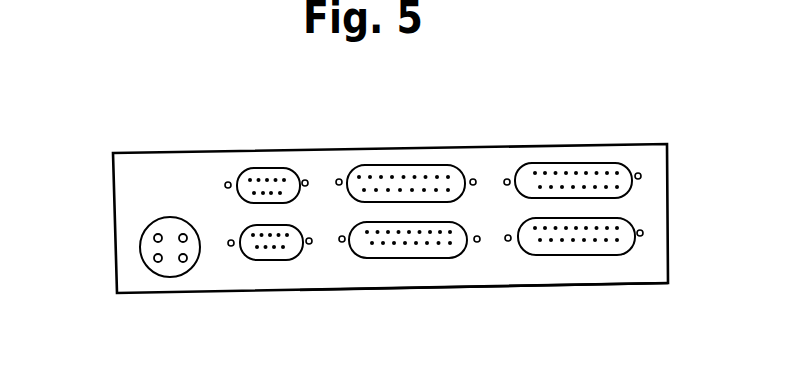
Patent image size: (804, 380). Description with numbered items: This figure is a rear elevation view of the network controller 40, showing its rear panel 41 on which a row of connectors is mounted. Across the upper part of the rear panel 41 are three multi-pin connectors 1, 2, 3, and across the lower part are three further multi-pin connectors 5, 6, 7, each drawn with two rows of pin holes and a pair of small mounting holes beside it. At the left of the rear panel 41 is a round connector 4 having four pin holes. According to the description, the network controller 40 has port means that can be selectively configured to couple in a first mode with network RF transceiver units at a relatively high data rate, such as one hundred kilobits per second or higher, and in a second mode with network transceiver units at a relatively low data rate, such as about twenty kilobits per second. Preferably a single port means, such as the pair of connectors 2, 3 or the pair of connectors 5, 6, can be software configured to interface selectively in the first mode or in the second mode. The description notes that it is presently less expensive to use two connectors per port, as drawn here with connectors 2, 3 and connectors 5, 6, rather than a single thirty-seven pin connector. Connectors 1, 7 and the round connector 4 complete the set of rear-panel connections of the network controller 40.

The connector 1 is at (617, 163).
The port means connector 2 is at (398, 172).
The port means connector 3 is at (278, 170).
The connector 4 is at (150, 265).
The port means connector 5 is at (273, 260).
The port means connector 6 is at (398, 258).
The connector 7 is at (623, 250).
The network controller 40 is at (94, 225).
The rear panel 41 is at (657, 245).